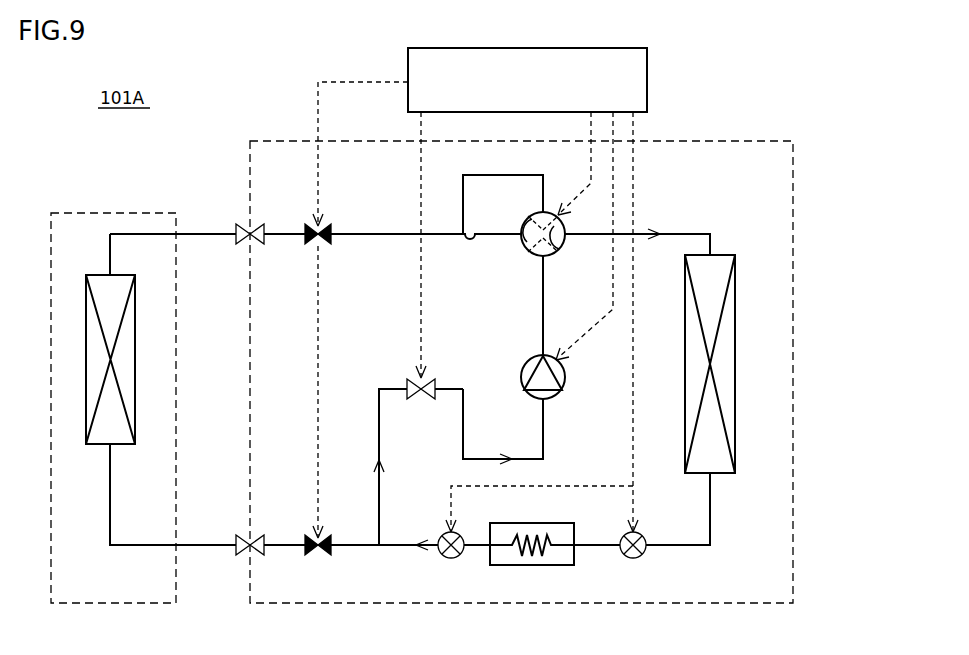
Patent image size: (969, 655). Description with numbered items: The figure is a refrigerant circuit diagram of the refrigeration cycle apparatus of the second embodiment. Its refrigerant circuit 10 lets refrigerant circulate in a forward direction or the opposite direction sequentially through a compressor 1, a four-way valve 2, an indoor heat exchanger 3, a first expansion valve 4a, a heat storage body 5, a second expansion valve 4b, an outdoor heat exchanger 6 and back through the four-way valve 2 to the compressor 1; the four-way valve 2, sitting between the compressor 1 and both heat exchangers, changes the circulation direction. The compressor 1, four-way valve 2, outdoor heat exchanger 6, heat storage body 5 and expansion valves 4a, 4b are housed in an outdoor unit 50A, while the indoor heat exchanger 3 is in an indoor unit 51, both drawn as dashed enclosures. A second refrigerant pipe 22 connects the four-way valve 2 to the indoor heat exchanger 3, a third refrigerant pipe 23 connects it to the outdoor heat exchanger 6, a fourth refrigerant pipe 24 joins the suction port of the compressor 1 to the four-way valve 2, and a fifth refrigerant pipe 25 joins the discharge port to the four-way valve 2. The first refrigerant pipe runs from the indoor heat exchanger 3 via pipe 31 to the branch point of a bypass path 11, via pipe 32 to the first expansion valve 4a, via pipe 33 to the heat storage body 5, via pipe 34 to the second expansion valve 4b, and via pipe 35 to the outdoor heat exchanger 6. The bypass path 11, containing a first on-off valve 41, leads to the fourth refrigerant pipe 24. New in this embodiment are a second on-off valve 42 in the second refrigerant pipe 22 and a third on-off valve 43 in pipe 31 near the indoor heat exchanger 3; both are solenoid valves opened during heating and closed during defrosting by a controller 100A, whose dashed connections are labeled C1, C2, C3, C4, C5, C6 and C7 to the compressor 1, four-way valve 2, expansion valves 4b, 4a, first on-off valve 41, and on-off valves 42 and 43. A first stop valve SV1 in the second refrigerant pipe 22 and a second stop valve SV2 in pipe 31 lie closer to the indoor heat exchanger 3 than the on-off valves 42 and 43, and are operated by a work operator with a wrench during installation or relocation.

The controller 100A is at (583, 48).
The outdoor unit 50A is at (743, 141).
The indoor unit 51 is at (143, 213).
The compressor 1 is at (561, 393).
The four-way valve 2 is at (560, 250).
The indoor heat exchanger 3 is at (135, 328).
The first expansion valve 4a is at (449, 558).
The second expansion valve 4b is at (631, 558).
The heat storage body 5 is at (539, 565).
The outdoor heat exchanger 6 is at (735, 326).
The refrigerant circuit 10 is at (403, 218).
The bypass path 11 is at (388, 389).
The second refrigerant pipe 22 is at (381, 238).
The third refrigerant pipe 23 is at (689, 233).
The fourth refrigerant pipe 24 is at (466, 286).
The fifth refrigerant pipe 25 is at (541, 324).
The pipe 31 is at (140, 545).
The pipe 32 is at (396, 552).
The pipe 33 is at (470, 543).
The pipe 34 is at (596, 543).
The pipe 35 is at (688, 552).
The first on-off valve 41 is at (427, 399).
The second on-off valve 42 is at (329, 244).
The third on-off valve 43 is at (325, 555).
The first stop valve SV1 is at (242, 244).
The second stop valve SV2 is at (242, 555).
The compressor control signal C1 is at (584, 236).
The four-way valve control signal C2 is at (574, 163).
The second expansion valve control signal C3 is at (645, 322).
The first expansion valve control signal C4 is at (525, 509).
The bypass valve control signal C5 is at (410, 245).
The first solenoid valve control signal C6 is at (360, 154).
The second solenoid valve control signal C7 is at (352, 298).